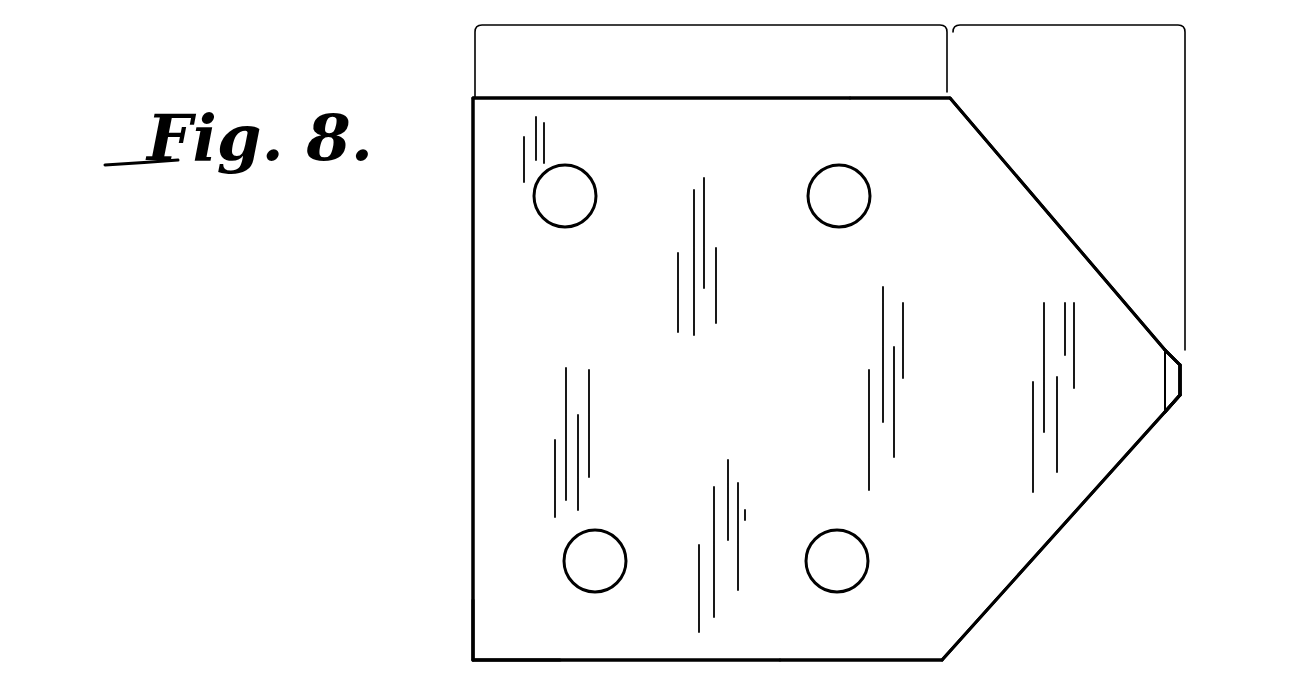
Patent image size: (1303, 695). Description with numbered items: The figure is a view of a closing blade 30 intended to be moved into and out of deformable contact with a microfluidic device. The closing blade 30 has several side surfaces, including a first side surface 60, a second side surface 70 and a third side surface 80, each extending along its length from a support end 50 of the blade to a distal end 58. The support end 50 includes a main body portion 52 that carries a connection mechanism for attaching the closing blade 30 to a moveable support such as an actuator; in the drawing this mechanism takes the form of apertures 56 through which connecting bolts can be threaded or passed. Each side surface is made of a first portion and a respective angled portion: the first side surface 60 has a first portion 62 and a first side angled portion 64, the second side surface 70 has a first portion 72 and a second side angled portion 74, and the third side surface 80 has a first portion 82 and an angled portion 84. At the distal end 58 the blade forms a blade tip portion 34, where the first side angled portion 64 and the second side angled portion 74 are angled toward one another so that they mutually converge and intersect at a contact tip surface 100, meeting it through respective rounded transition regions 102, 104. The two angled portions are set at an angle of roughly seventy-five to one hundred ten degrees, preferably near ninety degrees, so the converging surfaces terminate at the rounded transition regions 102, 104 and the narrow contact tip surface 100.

The closing blade 30 is at (440, 128).
The blade tip portion 34 is at (1150, 274).
The support end 50 is at (593, 26).
The main body portion 52 is at (501, 622).
The apertures 56 is at (547, 207).
The distal end 58 is at (1072, 26).
The first side surface 60 is at (857, 98).
The first portion 62 is at (708, 98).
The first side angled portion 64 is at (1070, 230).
The second side surface 70 is at (650, 660).
The first portion 72 is at (913, 660).
The second side angled portion 74 is at (1052, 548).
The third side surface 80 is at (660, 333).
The first portion 82 is at (503, 273).
The angled portion 84 is at (1182, 360).
The contact tip surface 100 is at (1183, 376).
The rounded transition region 102 is at (1180, 368).
The rounded transition region 104 is at (1182, 397).